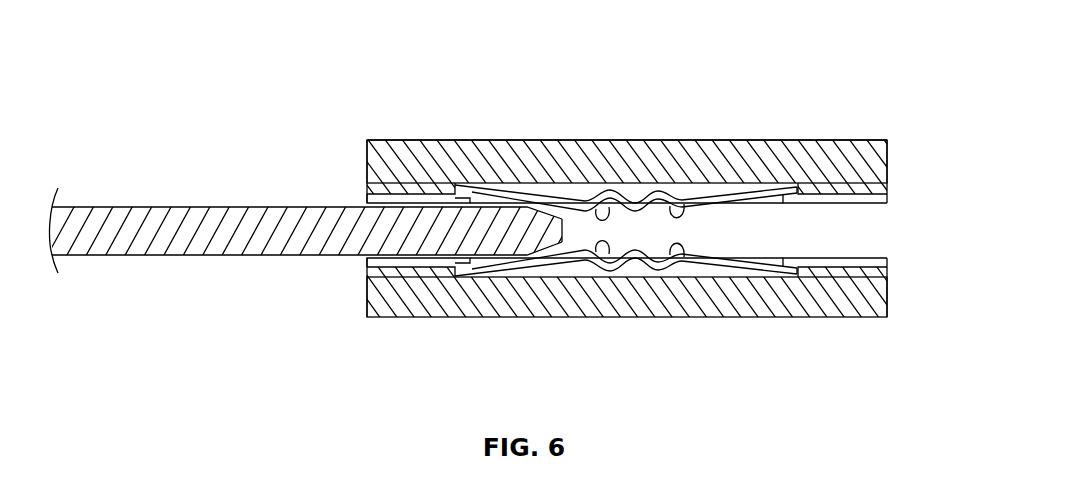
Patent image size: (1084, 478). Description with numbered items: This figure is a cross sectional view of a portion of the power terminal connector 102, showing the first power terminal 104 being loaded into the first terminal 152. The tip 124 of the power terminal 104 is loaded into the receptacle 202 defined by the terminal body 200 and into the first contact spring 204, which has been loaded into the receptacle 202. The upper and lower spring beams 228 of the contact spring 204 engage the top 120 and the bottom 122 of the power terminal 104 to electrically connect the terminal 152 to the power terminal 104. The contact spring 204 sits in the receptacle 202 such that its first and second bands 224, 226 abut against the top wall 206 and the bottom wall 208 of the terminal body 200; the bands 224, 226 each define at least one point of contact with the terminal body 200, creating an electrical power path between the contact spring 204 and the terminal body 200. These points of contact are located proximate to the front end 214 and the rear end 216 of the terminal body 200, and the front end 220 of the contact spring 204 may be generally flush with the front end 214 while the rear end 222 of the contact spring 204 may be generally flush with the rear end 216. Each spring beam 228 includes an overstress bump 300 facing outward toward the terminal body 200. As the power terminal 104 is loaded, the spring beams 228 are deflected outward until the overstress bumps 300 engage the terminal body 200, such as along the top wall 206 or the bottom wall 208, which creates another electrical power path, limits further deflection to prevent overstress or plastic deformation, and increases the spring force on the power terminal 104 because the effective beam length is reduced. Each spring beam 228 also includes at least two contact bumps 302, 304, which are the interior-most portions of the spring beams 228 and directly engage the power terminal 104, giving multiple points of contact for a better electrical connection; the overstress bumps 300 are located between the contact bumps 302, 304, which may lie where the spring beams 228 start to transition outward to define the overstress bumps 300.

The power terminal connector 102 is at (504, 234).
The first power terminal 104 is at (323, 267).
The top of the power terminal 120 is at (303, 207).
The bottom of the power terminal 122 is at (317, 256).
The tip of the power terminal 124 is at (568, 236).
The first terminal 152 is at (430, 118).
The terminal body 200 is at (606, 235).
The receptacle 202 is at (867, 233).
The first contact spring 204 is at (858, 270).
The top wall 206 is at (712, 152).
The bottom wall 208 is at (690, 305).
The front end of the terminal body 214 is at (367, 150).
The rear end of the terminal body 216 is at (887, 165).
The front end of the contact spring 220 is at (367, 192).
The rear end of the contact spring 222 is at (887, 187).
The first band 224 is at (455, 190).
The second band 226 is at (868, 140).
The spring beams 228 is at (848, 188).
The overstress bump 300 is at (635, 230).
The contact bump 302 is at (598, 197).
The contact bump 304 is at (712, 200).